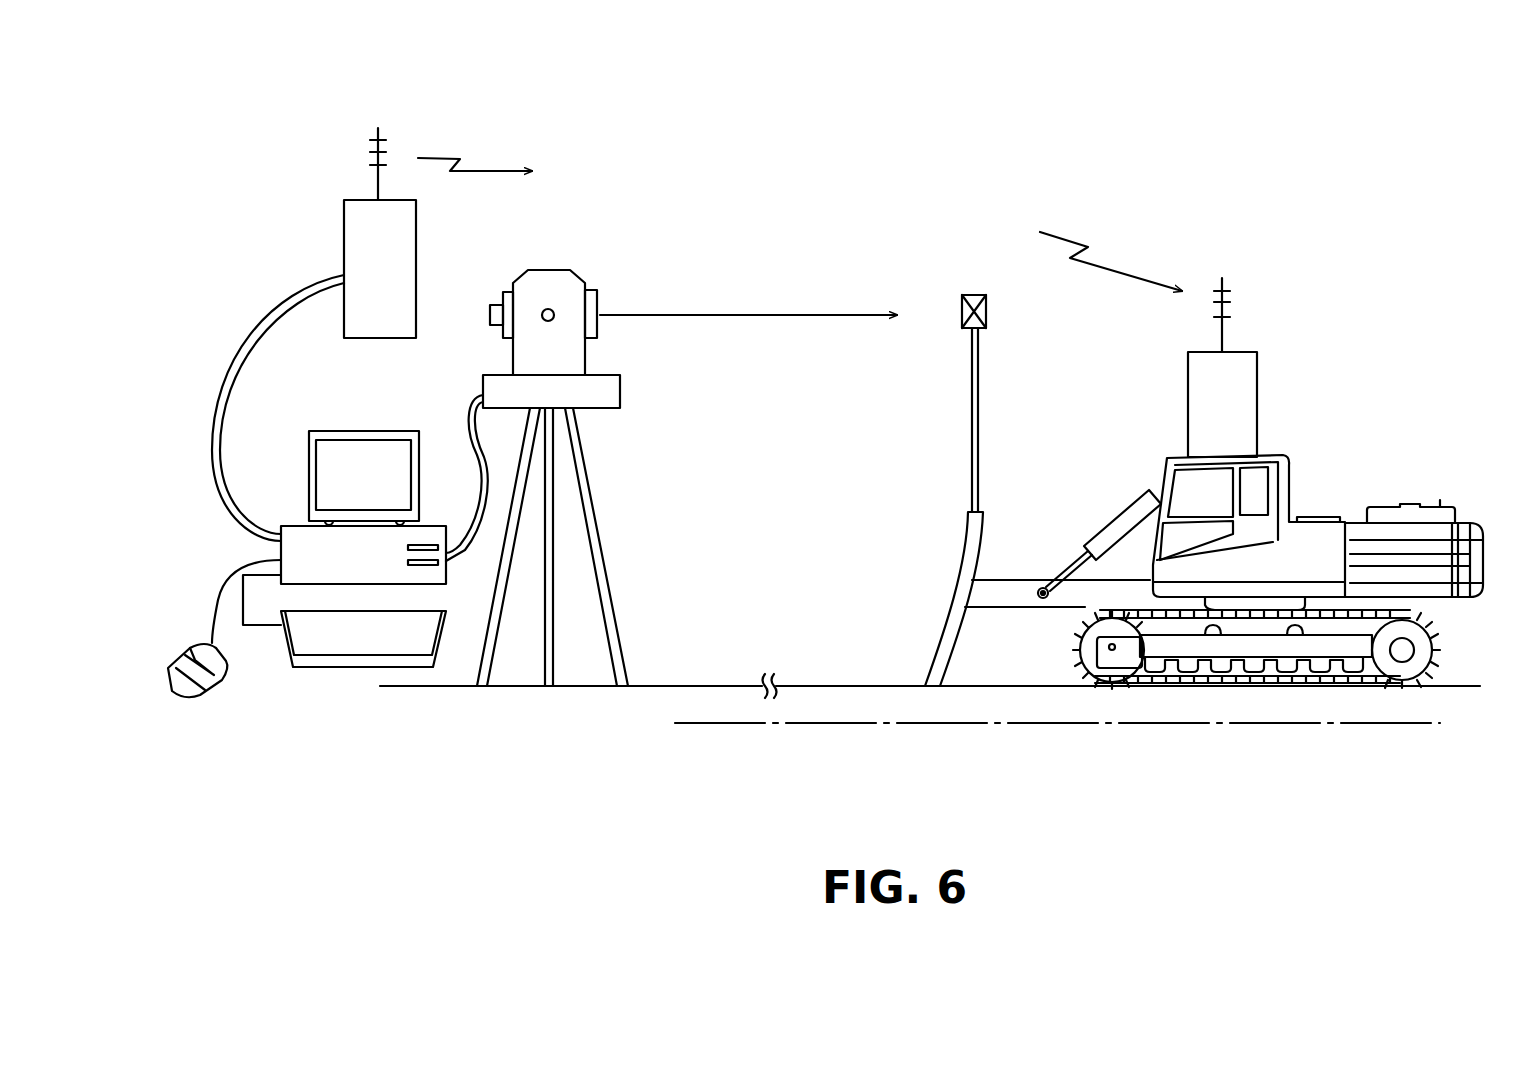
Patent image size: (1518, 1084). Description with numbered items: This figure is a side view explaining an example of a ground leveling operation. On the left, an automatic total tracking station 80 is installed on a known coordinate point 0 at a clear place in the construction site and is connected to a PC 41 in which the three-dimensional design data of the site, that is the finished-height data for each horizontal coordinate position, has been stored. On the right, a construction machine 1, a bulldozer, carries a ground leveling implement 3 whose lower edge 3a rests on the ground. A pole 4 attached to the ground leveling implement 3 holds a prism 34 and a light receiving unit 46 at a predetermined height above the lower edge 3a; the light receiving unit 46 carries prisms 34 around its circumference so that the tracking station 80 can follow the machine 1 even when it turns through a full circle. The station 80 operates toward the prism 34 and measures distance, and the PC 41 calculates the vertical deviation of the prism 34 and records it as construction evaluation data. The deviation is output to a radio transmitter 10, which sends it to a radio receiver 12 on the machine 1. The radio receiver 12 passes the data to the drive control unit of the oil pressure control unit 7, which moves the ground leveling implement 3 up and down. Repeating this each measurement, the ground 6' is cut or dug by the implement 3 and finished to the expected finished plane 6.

The radio transmitter 10 is at (353, 237).
The PC 41 is at (358, 567).
The automatic total tracking station 80 is at (600, 282).
The known coordinate point 0 is at (550, 689).
The finished plane 6 is at (1056, 668).
The ground 6' is at (821, 649).
The ground leveling implement 3 is at (955, 600).
The lower edge 3a is at (925, 683).
The pole 4 is at (978, 468).
The prism 34 is at (962, 310).
The light receiving unit 46 is at (992, 312).
The oil pressure control unit 7 is at (1097, 532).
The radio receiver 12 is at (1250, 388).
The construction machine 1 is at (1322, 503).